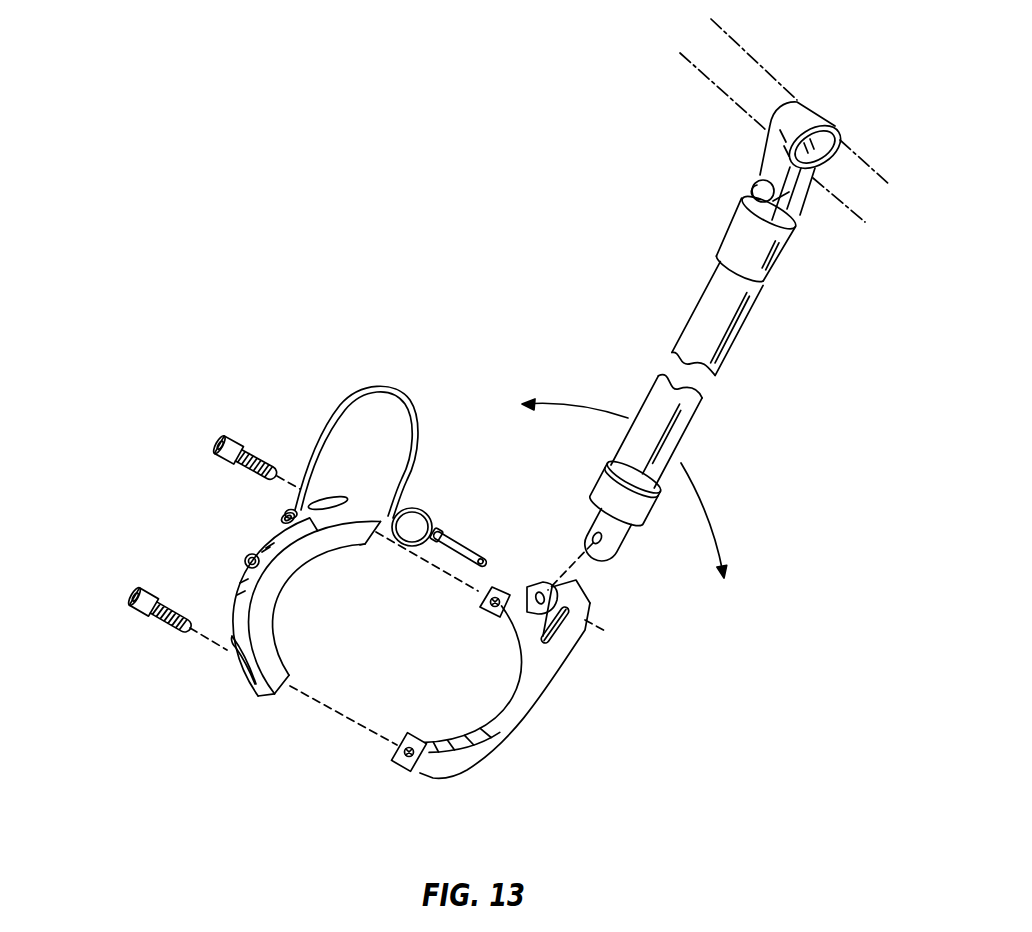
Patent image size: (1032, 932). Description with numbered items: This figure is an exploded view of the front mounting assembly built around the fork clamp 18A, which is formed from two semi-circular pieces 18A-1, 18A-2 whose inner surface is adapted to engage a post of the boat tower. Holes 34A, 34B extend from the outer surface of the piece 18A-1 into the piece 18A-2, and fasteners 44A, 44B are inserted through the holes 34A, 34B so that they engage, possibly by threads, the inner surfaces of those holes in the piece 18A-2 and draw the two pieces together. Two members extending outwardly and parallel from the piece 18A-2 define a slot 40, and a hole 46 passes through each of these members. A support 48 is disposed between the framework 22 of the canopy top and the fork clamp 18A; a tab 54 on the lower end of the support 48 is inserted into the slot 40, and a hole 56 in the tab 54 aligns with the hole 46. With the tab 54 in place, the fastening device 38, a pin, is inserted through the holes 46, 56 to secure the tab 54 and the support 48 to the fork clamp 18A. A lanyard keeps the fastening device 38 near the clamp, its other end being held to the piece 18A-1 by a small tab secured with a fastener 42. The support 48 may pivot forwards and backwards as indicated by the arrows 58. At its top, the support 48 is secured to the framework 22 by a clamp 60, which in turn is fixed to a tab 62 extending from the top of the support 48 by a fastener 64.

The fork clamp 18A is at (437, 852).
The semi-circular piece 18A-1 is at (240, 608).
The semi-circular piece 18A-2 is at (523, 707).
The framework 22 is at (738, 80).
The hole 34A is at (238, 663).
The hole 34B is at (335, 498).
The fastening device 38 is at (453, 543).
The slot 40 is at (568, 623).
The fastener 42 is at (245, 560).
The fastener 44A is at (132, 590).
The fastener 44B is at (218, 443).
The hole 46 is at (536, 596).
The support 48 is at (677, 422).
The tab 54 is at (618, 547).
The hole 56 is at (595, 536).
The arrows 58 is at (589, 404).
The clamp 60 is at (808, 113).
The tab 62 is at (787, 213).
The fastener 64 is at (752, 186).